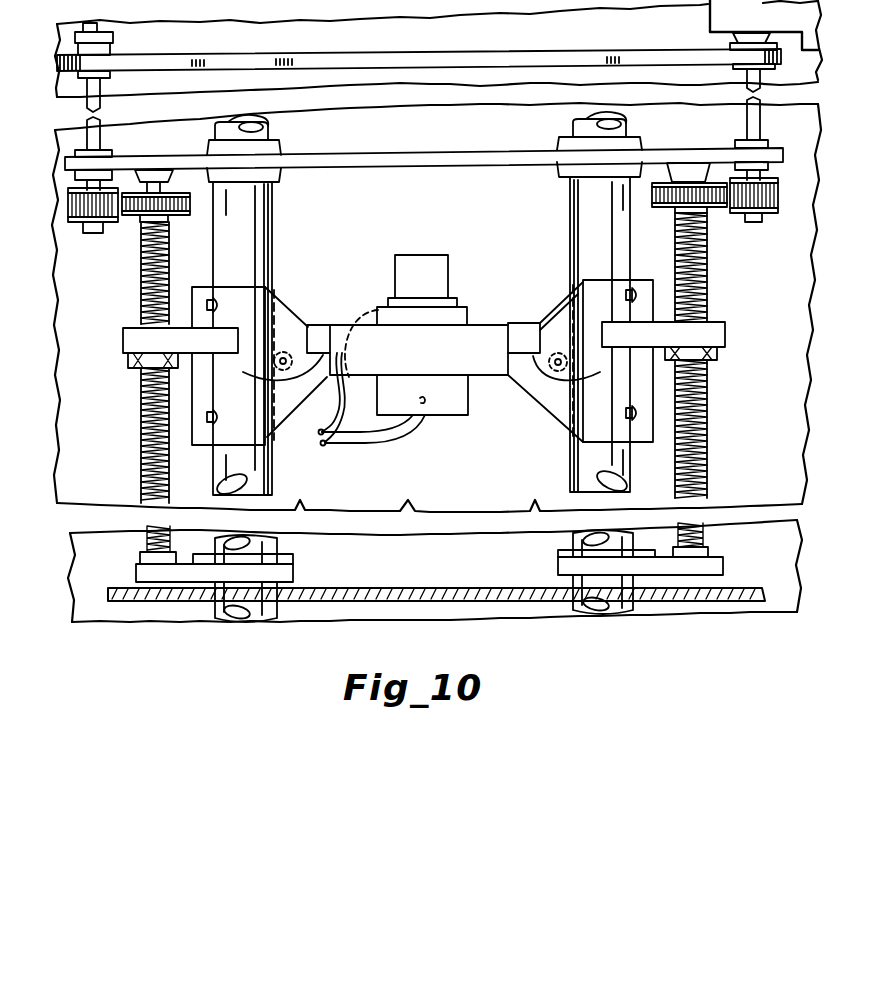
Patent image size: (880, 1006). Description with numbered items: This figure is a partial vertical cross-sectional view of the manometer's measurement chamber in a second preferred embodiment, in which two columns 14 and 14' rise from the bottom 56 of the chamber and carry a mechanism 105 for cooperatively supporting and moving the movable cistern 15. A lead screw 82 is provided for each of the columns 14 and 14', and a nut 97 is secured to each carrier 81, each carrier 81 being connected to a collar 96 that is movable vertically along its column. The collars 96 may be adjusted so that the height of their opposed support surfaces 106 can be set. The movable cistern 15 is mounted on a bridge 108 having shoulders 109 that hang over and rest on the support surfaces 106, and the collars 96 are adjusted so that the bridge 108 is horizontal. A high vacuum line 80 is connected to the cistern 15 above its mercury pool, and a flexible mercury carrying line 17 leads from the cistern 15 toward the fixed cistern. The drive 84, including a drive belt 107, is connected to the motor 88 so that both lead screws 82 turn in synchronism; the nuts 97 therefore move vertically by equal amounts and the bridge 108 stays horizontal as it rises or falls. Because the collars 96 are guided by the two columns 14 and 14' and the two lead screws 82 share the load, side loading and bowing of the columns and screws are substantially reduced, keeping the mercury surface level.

The drive belt 107 is at (514, 52).
The motor 88 is at (708, 19).
The collar 96 is at (238, 287).
The carrier 81 is at (178, 328).
The column 14' is at (273, 306).
The column 14 is at (576, 303).
The shoulder 109 is at (317, 326).
The movable cistern 15 is at (425, 260).
The bridge 108 is at (513, 325).
The support surface 106 is at (283, 380).
The mechanism 105 is at (528, 431).
The nut 97 is at (128, 366).
The lead screw 82 is at (147, 445).
The drive 84 is at (710, 423).
The high vacuum line 80 is at (323, 432).
The flexible mercury carrying line 17 is at (353, 445).
The bottom of the measurement chamber 56 is at (480, 588).